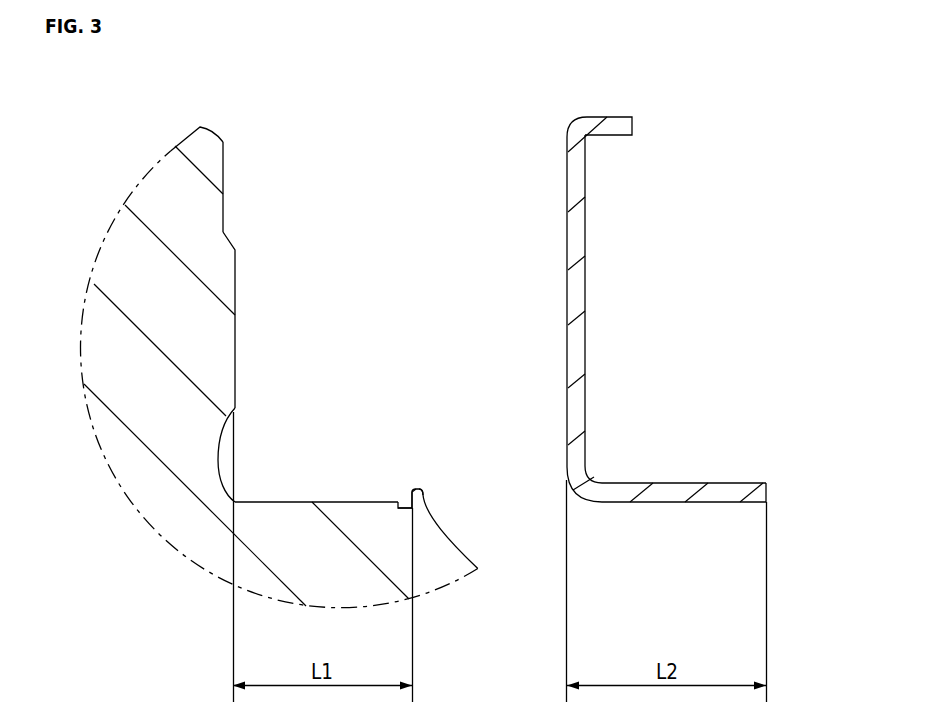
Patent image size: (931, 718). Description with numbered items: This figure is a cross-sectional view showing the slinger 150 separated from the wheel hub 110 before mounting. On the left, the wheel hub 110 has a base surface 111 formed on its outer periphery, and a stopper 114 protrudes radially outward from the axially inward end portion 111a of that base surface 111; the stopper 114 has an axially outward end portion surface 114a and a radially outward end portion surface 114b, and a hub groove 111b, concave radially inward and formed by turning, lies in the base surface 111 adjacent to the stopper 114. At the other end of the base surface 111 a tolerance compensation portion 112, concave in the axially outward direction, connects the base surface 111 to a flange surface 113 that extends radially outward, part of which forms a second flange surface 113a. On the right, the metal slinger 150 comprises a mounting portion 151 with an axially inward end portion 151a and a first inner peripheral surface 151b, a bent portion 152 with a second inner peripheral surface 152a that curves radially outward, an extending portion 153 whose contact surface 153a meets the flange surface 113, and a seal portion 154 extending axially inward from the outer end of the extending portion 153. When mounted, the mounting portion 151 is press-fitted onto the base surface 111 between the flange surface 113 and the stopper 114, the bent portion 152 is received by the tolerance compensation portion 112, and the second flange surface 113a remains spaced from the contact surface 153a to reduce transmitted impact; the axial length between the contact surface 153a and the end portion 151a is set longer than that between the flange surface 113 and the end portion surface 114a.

The wheel hub 110 is at (190, 210).
The base surface 111 is at (293, 500).
The axially inward end portion 111a is at (392, 522).
The hub groove 111b is at (413, 517).
The tolerance compensation portion 112 is at (227, 458).
The flange surface 113 is at (236, 298).
The second flange surface 113a is at (223, 165).
The stopper 114 is at (415, 498).
The axially outward end portion surface 114a is at (408, 491).
The radially outward end portion surface 114b is at (417, 492).
The slinger 150 is at (660, 320).
The mounting portion 151 is at (735, 490).
The axially inward end portion 151a is at (766, 491).
The first inner peripheral surface 151b is at (678, 503).
The bent portion 152 is at (618, 447).
The second inner peripheral surface 152a is at (585, 488).
The extending portion 153 is at (578, 219).
The contact surface 153a is at (567, 275).
The seal portion 154 is at (617, 122).